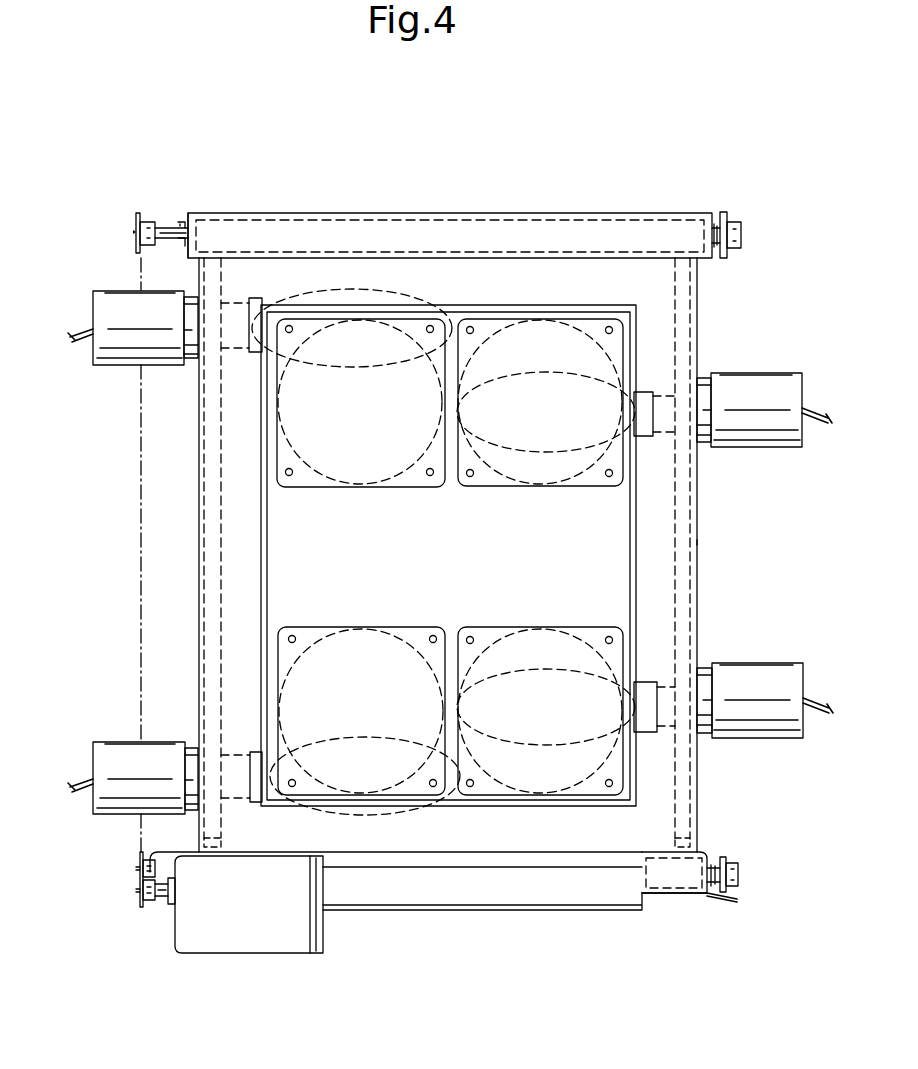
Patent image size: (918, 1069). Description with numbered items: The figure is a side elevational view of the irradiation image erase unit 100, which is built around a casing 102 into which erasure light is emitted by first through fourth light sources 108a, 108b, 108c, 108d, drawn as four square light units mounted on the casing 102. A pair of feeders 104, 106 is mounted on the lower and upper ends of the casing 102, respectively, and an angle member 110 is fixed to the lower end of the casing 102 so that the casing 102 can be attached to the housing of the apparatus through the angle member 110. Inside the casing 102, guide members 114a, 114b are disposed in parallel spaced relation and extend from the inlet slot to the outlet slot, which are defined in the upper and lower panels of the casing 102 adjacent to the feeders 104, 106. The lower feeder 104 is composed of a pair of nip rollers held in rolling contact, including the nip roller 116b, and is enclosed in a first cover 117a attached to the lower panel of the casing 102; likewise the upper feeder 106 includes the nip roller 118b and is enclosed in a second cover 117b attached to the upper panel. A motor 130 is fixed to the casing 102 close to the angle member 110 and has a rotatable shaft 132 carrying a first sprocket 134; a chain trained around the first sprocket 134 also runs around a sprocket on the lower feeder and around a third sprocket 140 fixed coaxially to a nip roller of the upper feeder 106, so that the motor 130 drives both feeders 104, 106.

The irradiation image erase unit 100 is at (699, 543).
The casing 102 is at (698, 340).
The feeder 104 is at (689, 894).
The feeder 106 is at (477, 212).
The first light source 108a is at (383, 304).
The second light source 108b is at (550, 390).
The third light source 108c is at (542, 684).
The fourth light source 108d is at (342, 750).
The angle member 110 is at (500, 912).
The guide member 114a is at (212, 470).
The guide member 114b is at (680, 497).
The nip roller 116b is at (672, 870).
The first cover 117a is at (673, 895).
The second cover 117b is at (269, 213).
The nip roller 118b is at (362, 216).
The motor 130 is at (255, 942).
The rotatable shaft 132 is at (160, 900).
The first sprocket 134 is at (138, 895).
The third sprocket 140 is at (137, 227).